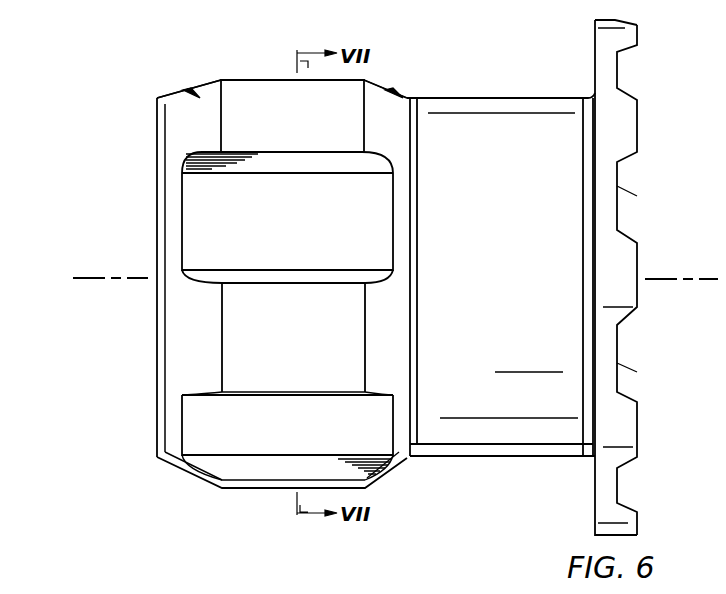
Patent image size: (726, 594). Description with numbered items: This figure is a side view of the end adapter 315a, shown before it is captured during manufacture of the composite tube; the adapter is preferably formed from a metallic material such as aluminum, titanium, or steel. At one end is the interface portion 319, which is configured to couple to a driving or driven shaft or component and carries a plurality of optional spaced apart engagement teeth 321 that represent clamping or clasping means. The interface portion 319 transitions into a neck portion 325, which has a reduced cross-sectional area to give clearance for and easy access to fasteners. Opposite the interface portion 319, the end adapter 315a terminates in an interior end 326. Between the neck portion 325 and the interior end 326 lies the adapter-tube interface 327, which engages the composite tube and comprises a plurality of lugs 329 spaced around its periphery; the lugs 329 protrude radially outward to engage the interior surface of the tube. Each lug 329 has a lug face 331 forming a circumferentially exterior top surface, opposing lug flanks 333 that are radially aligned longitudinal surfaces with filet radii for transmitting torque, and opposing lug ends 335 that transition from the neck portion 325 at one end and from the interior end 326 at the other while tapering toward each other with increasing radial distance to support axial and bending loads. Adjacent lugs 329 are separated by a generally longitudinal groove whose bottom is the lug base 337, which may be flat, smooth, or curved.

The end adapter 315a is at (124, 101).
The interface portion 319 is at (587, 46).
The engagement teeth 321 is at (273, 78).
The neck portion 325 is at (515, 463).
The interior end 326 is at (155, 183).
The adapter-tube interface 327 is at (225, 502).
The lug 329 is at (231, 74).
The lug face 331 is at (233, 118).
The lug flank 333 is at (280, 160).
The lug end 335 is at (200, 97).
The lug base 337 is at (193, 248).